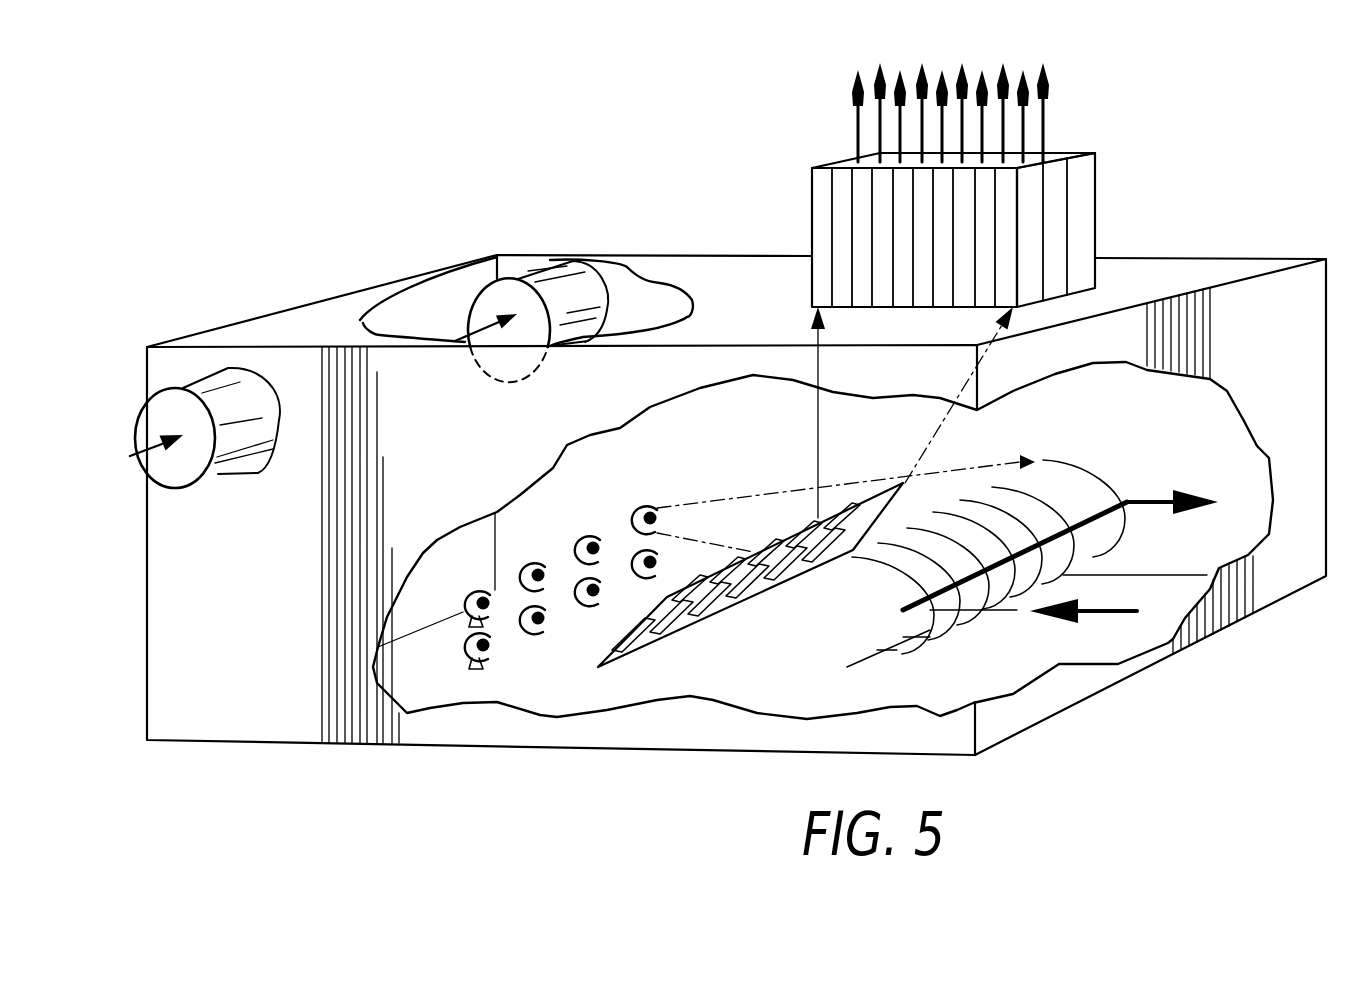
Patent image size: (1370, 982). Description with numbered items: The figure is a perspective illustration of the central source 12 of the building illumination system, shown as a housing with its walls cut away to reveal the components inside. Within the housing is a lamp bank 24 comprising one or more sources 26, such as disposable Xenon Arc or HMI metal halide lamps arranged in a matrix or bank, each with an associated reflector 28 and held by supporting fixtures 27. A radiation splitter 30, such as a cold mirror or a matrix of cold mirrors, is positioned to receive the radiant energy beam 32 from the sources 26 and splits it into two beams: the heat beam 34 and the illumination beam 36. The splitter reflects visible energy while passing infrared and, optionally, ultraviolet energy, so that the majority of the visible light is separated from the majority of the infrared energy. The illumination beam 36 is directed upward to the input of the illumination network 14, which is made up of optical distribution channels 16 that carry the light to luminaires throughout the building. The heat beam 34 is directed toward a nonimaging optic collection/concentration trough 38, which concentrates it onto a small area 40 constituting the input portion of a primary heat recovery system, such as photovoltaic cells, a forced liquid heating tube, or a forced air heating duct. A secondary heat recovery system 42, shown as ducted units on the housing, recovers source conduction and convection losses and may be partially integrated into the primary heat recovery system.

The central source 12 is at (368, 122).
The illumination network 14 is at (1108, 177).
The optical distribution channels 16 is at (1080, 230).
The array of light sources with reflectors 24 is at (600, 500).
The sources 26 is at (540, 618).
The supporting fixtures 27 is at (463, 621).
The reflectors 28 is at (537, 631).
The radiation splitter 30 is at (705, 612).
The radiant energy beam 32 is at (690, 497).
The heat beam 34 is at (995, 460).
The illumination beam 36 is at (875, 451).
The nonimaging optic collection/concentration trough 38 is at (1113, 488).
The small area 40 is at (918, 606).
The secondary heat recovery system 42 is at (193, 473).